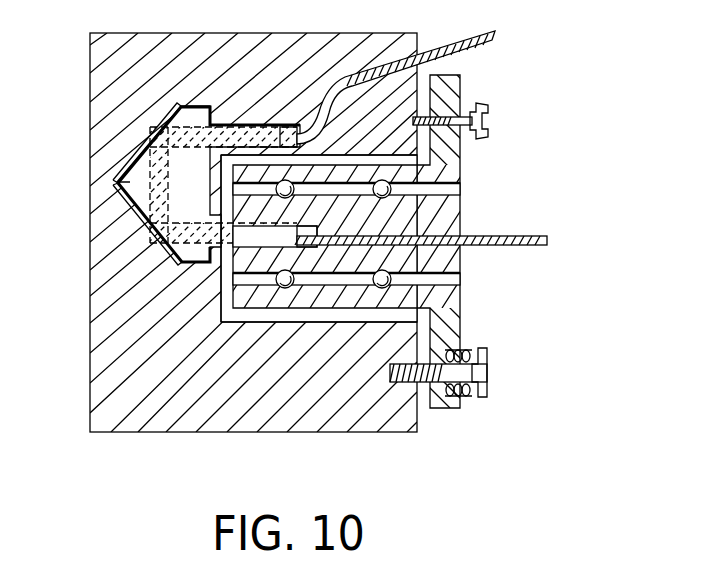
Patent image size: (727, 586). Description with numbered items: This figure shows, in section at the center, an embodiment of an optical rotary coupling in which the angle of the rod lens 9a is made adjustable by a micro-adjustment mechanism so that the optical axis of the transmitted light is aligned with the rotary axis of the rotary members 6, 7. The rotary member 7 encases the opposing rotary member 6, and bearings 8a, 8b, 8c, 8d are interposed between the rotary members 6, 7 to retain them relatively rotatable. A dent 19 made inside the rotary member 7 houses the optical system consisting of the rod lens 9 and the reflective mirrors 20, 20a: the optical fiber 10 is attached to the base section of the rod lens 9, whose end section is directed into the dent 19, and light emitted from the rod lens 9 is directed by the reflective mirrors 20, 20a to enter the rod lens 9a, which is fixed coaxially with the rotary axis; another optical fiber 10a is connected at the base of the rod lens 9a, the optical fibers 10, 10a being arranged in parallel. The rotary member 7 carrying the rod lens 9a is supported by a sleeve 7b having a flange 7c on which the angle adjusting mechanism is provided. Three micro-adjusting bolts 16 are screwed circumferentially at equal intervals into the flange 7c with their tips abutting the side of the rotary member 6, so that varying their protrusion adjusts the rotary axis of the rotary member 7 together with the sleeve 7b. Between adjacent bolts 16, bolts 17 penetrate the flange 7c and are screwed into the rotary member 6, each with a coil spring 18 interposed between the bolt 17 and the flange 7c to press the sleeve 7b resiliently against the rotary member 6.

The rotary member 6 is at (257, 46).
The rotary member 7 is at (397, 270).
The sleeve 7b is at (447, 203).
The flange 7c is at (457, 92).
The bearing 8a is at (287, 198).
The bearing 8b is at (385, 192).
The bearing 8c is at (285, 288).
The bearing 8d is at (382, 288).
The rod lens 9 is at (247, 128).
The rod lens 9a is at (260, 246).
The optical fiber 10 is at (455, 45).
The optical fiber 10a is at (530, 236).
The bolt for micro-adjustment 16 is at (490, 110).
The bolt 17 is at (470, 362).
The coil spring 18 is at (466, 396).
The dent 19 is at (130, 182).
The reflective mirror 20 is at (158, 148).
The reflective mirror 20a is at (158, 215).